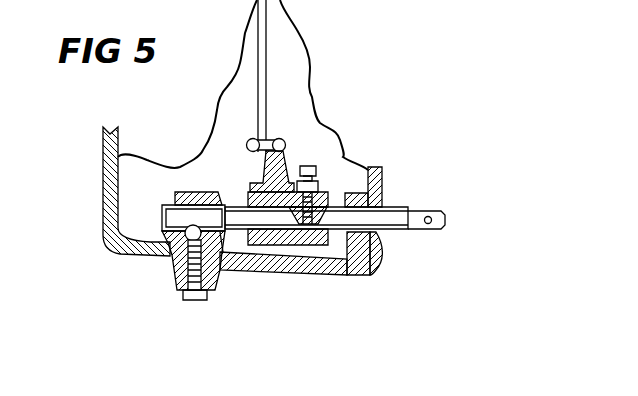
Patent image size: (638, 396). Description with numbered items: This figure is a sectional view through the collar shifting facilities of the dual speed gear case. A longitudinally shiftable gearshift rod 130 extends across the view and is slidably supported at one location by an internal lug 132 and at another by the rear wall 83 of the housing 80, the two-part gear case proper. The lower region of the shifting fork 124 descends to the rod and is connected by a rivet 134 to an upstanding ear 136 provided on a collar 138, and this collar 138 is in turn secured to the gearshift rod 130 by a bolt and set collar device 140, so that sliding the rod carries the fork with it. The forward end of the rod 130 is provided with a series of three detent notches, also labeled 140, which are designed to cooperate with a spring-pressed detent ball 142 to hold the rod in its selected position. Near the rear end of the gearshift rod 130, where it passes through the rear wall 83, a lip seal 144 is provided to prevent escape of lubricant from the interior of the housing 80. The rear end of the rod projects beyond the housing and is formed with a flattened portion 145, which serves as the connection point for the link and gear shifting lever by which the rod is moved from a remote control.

The housing 80 is at (371, 265).
The rear wall 83 is at (383, 173).
The shifting fork 124 is at (263, 93).
The gearshift rod 130 is at (383, 217).
The internal lug 132 is at (172, 188).
The rivet 134 is at (283, 155).
The upstanding ear 136 is at (268, 174).
The collar 138 is at (279, 248).
The bolt and set collar device 140 is at (319, 174).
The spring-pressed detent ball 142 is at (163, 254).
The lip seal 144 is at (382, 239).
The flattened portion 145 is at (427, 210).